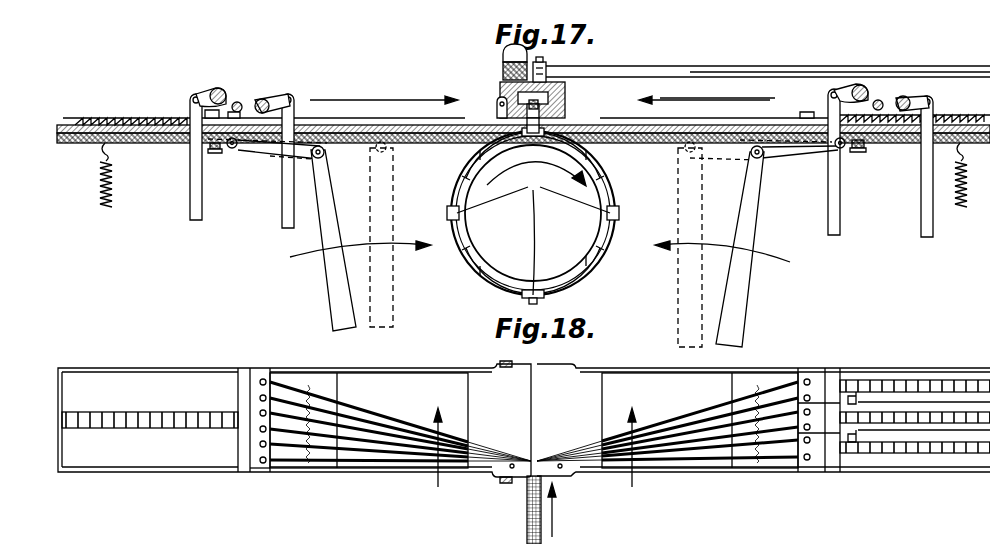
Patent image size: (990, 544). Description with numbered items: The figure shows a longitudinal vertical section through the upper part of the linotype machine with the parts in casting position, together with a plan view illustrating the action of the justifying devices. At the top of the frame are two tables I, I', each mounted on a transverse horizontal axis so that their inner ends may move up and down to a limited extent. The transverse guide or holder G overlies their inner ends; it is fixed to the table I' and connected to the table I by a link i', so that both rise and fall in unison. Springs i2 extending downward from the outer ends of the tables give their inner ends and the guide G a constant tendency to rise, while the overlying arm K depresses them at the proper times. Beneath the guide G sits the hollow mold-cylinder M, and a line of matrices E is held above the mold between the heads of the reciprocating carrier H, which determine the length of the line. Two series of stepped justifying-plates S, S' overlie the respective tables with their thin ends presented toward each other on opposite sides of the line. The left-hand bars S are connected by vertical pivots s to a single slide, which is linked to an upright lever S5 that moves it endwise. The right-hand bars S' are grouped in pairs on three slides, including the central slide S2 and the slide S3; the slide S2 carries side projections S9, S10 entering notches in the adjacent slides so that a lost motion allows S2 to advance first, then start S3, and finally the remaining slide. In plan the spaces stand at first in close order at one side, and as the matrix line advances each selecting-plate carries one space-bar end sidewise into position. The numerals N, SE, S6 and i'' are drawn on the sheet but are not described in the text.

In FIG. 17, the overlying arm K is at (490, 98).
In FIG. 17, the transverse guide or holder G is at (543, 107).
In FIG. 17, the horizontal reciprocating carrier H is at (565, 108).
In FIG. 17, the pin N is at (535, 135).
In FIG. 17, the hollow mold-cylinder M is at (533, 216).
In FIG. 17, the justifying-plates S is at (540, 107).
In FIG. 18, the justifying-plates S is at (400, 434).
In FIG. 17, the ratchet strip SE is at (126, 110).
In FIG. 18, the ratchet strip SE is at (150, 406).
In FIG. 17, the central space-carrying slide S2 is at (915, 108).
In FIG. 18, the central space-carrying slide S2 is at (264, 465).
In FIG. 18, the slide S3 is at (819, 446).
In FIG. 17, the upright lever S5 is at (330, 215).
In FIG. 17, the swinging arm S6 is at (750, 242).
In FIG. 18, the projection S9 is at (851, 456).
In FIG. 18, the projection S10 is at (858, 396).
In FIG. 18, the justifying-plates S' is at (680, 433).
In FIG. 17, the table I is at (225, 158).
In FIG. 18, the table I is at (369, 434).
In FIG. 17, the table I' is at (866, 160).
In FIG. 18, the table I' is at (700, 433).
In FIG. 17, the link i' is at (487, 106).
In FIG. 18, the link i' is at (517, 405).
In FIG. 18, the lug i'' is at (493, 487).
In FIG. 17, the springs i2 is at (531, 175).
In FIG. 18, the vertical pivots s is at (265, 378).
In FIG. 18, the line of matrices E is at (526, 510).